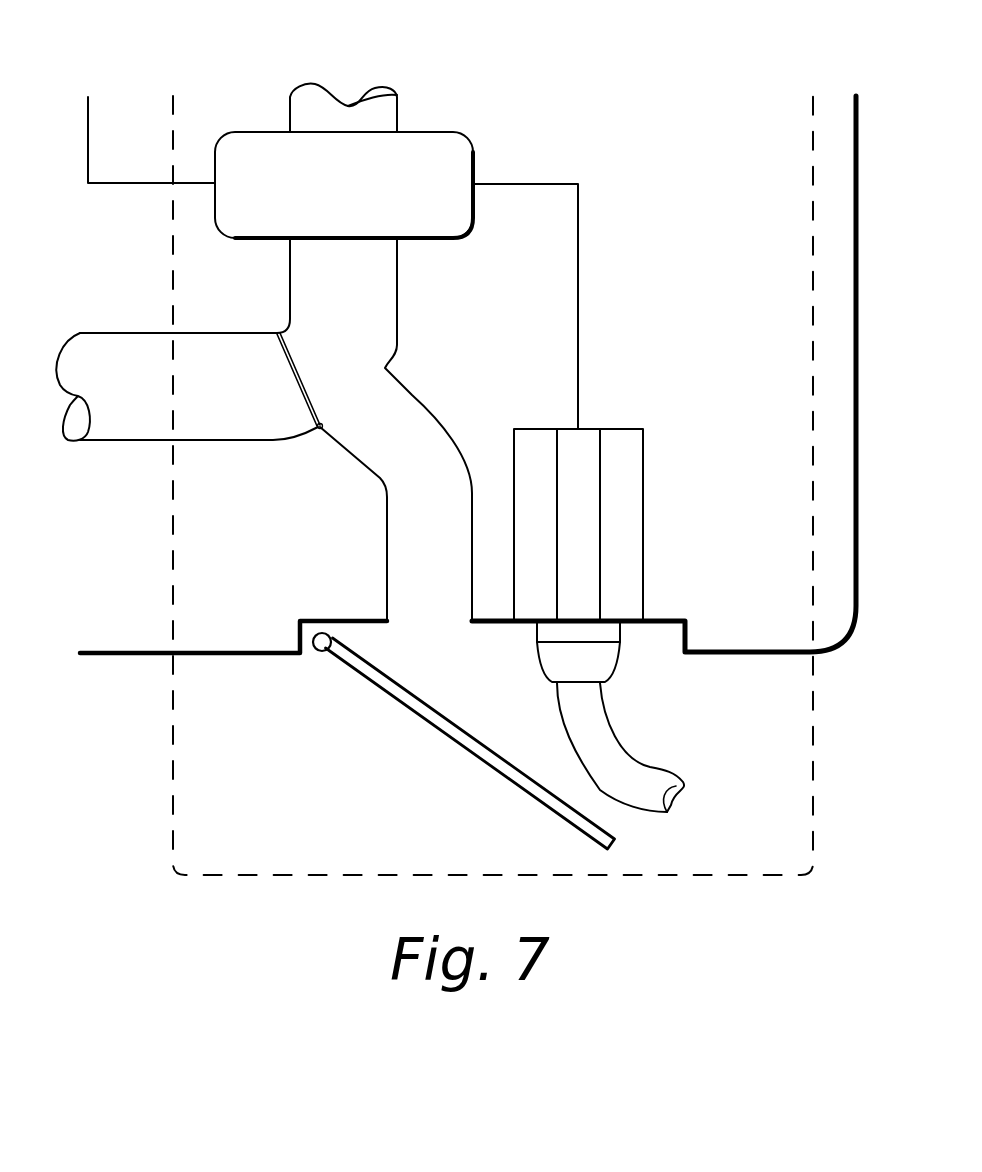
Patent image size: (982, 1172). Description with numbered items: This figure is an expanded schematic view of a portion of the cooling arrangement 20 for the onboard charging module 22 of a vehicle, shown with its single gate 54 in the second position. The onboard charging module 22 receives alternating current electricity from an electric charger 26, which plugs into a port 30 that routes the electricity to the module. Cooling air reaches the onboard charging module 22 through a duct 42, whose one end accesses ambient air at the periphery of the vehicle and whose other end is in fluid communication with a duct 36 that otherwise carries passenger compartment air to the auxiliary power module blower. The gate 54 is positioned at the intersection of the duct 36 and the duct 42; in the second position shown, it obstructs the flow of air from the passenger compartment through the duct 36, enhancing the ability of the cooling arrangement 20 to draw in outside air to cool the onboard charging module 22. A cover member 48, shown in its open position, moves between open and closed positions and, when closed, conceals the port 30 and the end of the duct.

The cooling arrangement 20 is at (173, 257).
The onboard charging module 22 is at (465, 133).
The electric charger 26 is at (612, 728).
The port 30 is at (643, 513).
The duct 36 is at (237, 333).
The duct 42 is at (418, 397).
The cover member 48 is at (385, 695).
The gate 54 is at (298, 386).